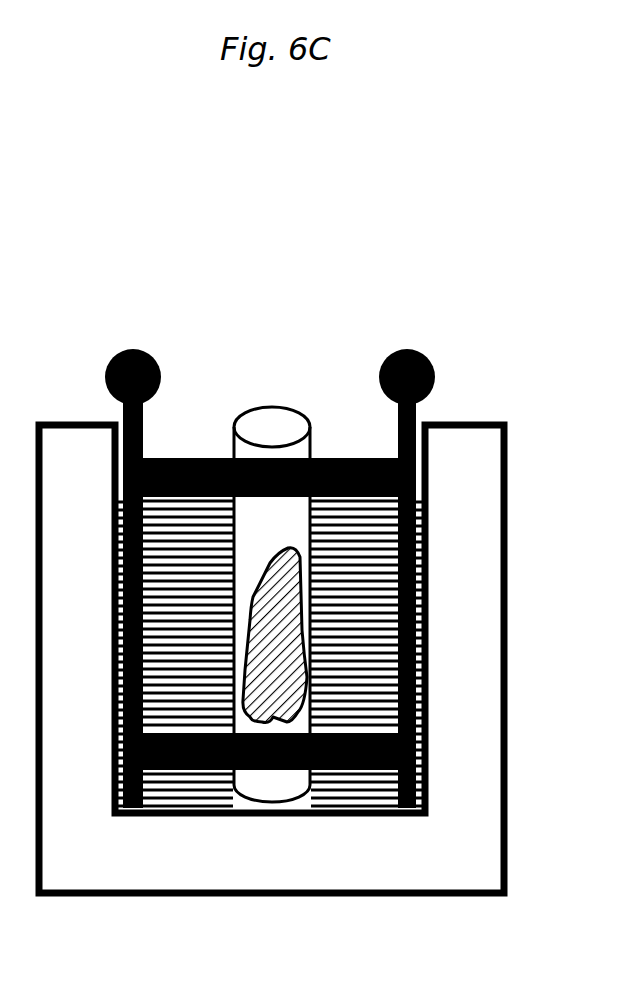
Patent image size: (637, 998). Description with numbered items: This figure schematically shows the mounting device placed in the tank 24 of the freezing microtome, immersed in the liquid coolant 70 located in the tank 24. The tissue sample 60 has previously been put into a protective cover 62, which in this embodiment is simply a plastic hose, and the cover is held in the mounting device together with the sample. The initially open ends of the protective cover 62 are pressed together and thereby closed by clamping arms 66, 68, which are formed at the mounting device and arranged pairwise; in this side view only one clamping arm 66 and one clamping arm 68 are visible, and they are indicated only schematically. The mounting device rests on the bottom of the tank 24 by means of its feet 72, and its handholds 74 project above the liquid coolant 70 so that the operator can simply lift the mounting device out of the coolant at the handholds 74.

The tank 24 is at (508, 510).
The tissue sample 60 is at (261, 576).
The protective cover 62 is at (232, 440).
The clamping arm 66 is at (343, 458).
The clamping arm 68 is at (335, 770).
The liquid coolant 70 is at (360, 800).
The feet 72 is at (130, 818).
The handholds 74 is at (118, 357).